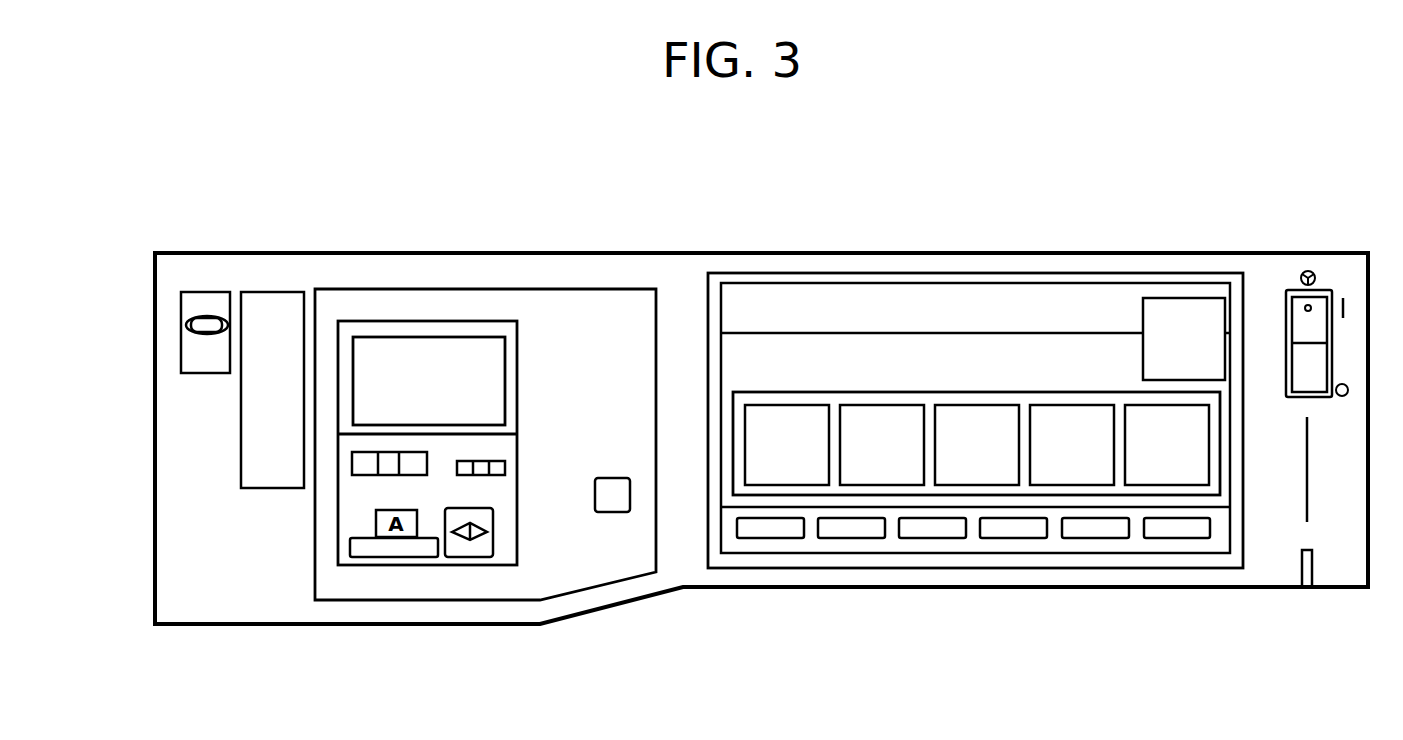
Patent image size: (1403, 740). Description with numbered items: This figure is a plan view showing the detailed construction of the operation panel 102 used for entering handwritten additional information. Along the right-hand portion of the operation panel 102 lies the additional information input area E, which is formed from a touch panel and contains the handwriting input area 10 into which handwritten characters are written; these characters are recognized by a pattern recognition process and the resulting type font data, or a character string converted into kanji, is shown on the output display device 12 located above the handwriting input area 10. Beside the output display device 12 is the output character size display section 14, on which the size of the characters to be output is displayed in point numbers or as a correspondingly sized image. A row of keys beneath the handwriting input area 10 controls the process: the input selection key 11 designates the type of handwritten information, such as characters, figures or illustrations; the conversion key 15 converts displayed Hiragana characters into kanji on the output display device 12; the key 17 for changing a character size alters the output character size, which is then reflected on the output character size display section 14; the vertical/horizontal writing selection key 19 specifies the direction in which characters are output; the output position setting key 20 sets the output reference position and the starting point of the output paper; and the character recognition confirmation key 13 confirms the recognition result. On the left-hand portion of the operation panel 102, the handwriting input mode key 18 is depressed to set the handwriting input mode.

The operation panel 102 is at (475, 205).
The additional information input area E is at (738, 283).
The output display device 12 is at (850, 300).
The handwriting input area 10 is at (965, 420).
The output character size display section 14 is at (1153, 323).
The handwriting input mode key 18 is at (613, 512).
The input selection key 11 is at (772, 538).
The conversion key 15 is at (853, 538).
The key for changing a character size 17 is at (935, 538).
The vertical/horizontal writing selection key 19 is at (1020, 538).
The output position setting key 20 is at (1105, 538).
The character recognition confirmation key 13 is at (1182, 538).